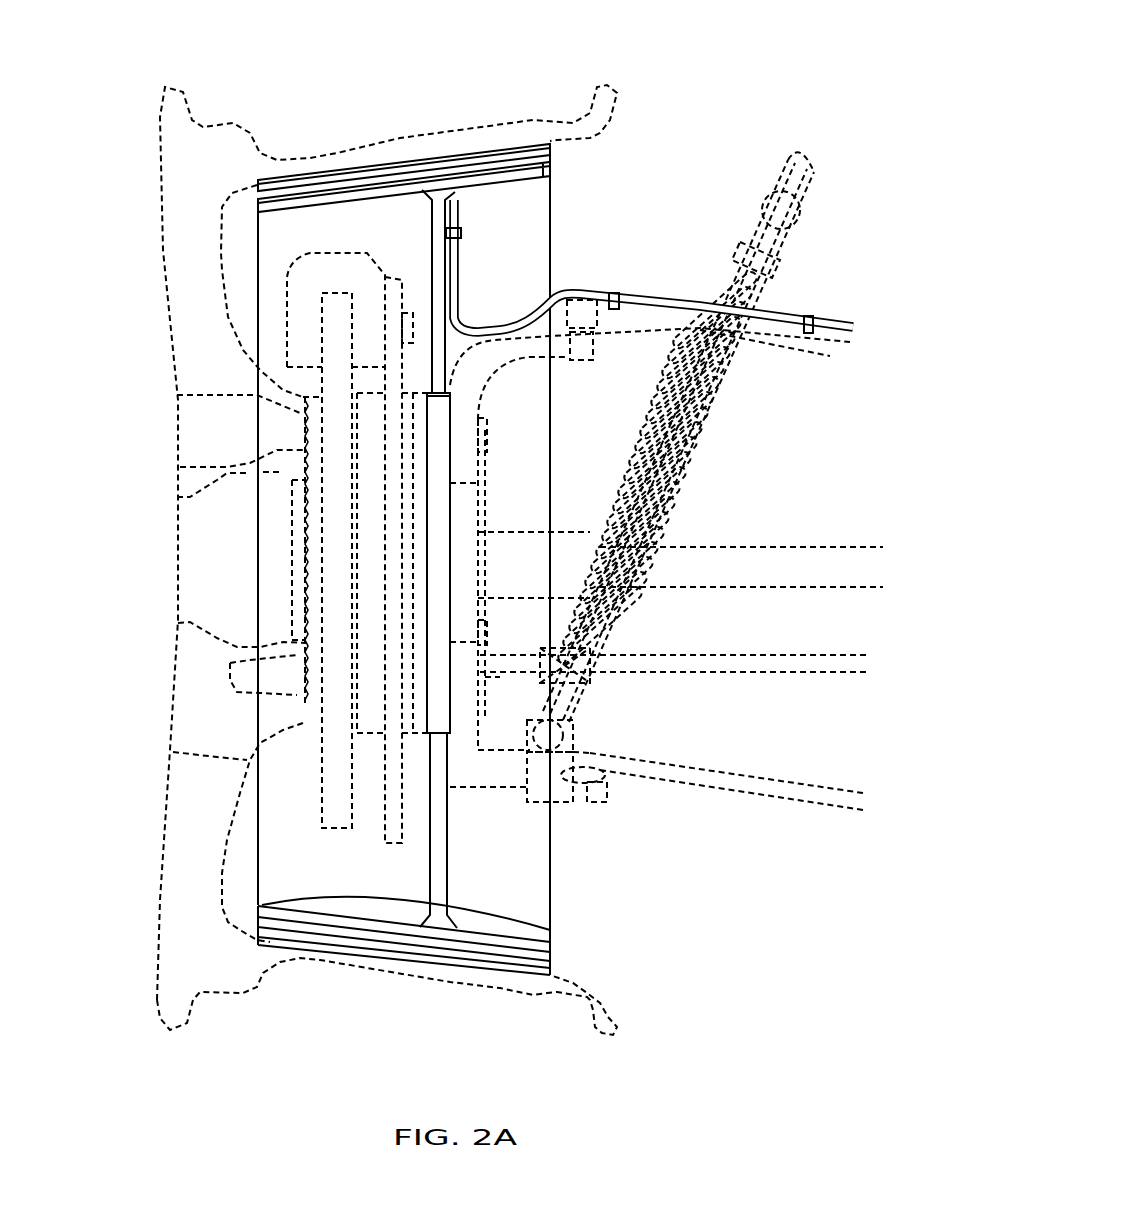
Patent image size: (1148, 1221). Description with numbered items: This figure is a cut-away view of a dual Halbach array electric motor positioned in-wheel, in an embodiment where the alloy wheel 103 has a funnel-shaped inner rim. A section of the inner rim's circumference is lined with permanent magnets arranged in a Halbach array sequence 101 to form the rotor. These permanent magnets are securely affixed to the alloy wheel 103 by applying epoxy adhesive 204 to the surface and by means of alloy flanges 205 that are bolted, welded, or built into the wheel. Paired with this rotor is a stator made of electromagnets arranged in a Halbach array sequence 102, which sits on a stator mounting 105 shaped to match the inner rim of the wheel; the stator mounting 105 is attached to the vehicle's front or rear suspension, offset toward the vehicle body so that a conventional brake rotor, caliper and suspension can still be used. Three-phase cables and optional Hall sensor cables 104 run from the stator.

The permanent magnets arranged in Halbach array sequence 101 is at (447, 955).
The electromagnets arranged in Halbach array sequence 102 is at (330, 923).
The alloy wheel 103 is at (337, 158).
The three-phase cables and optional Hall sensor cables 104 is at (485, 327).
The stator mounting 105 is at (497, 875).
The epoxy adhesive 204 is at (328, 180).
The alloy flanges 205 is at (553, 973).